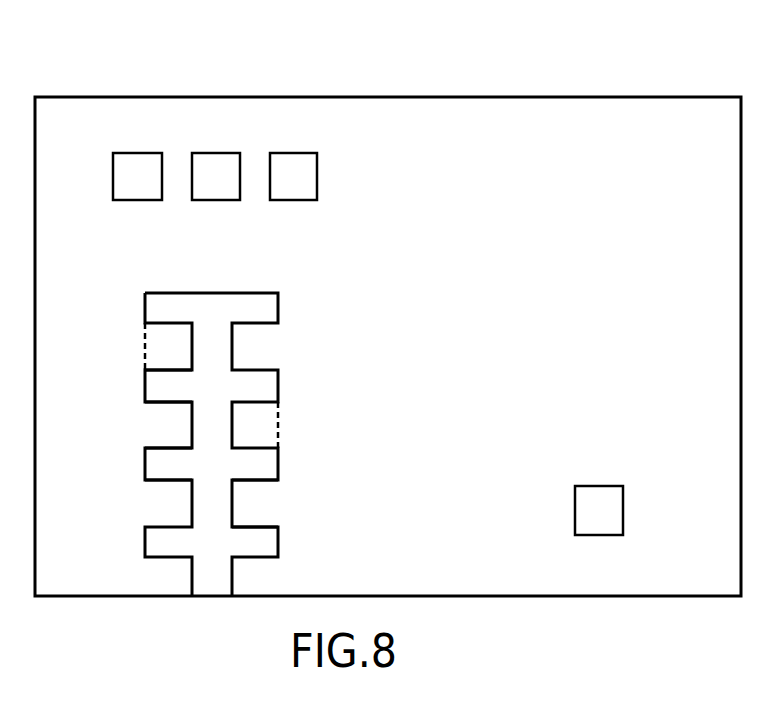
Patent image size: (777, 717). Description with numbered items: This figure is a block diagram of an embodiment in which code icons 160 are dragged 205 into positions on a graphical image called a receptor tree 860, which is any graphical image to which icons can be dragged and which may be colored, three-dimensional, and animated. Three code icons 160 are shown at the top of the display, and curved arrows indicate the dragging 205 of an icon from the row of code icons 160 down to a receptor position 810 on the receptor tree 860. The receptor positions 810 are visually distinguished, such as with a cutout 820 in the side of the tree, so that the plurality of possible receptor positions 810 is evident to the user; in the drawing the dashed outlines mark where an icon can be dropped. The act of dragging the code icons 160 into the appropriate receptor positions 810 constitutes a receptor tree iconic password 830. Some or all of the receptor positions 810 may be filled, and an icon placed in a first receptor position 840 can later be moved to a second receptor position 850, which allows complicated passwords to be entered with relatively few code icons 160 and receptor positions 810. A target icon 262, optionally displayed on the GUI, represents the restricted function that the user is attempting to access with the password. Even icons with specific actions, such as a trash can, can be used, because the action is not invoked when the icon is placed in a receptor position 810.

The code icons 160 is at (157, 148).
The dragging of code icons 205 is at (141, 346).
The target icon 262 is at (607, 495).
The receptor positions 810 is at (140, 360).
The cutout 820 is at (260, 498).
The receptor tree iconic password 830 is at (560, 282).
The first receptor position 840 is at (165, 422).
The second receptor position 850 is at (173, 502).
The receptor tree 860 is at (203, 302).